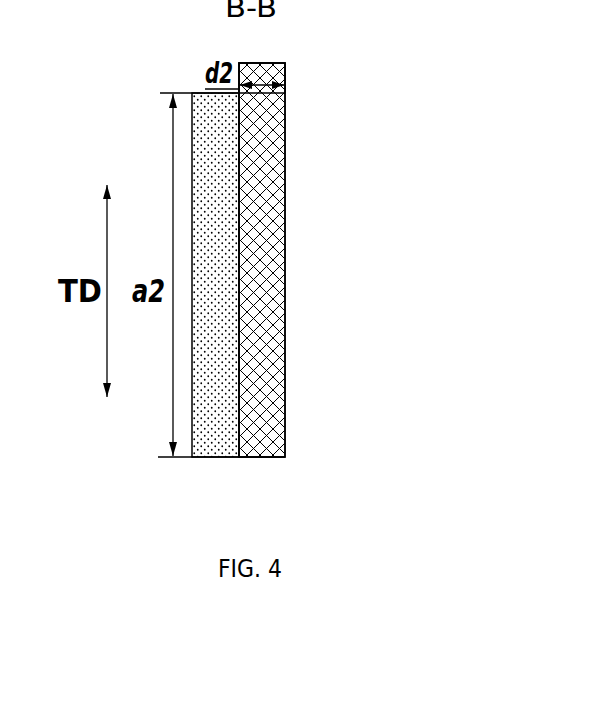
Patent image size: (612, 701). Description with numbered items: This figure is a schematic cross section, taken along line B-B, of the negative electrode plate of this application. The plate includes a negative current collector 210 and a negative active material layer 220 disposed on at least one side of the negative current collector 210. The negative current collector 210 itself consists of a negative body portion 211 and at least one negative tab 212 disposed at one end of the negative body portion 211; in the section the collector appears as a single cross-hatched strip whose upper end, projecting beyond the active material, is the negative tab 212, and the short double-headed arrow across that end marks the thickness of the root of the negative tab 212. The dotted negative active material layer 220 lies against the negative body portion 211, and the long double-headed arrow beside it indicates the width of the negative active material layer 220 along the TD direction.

The negative current collector 210 is at (403, 133).
The negative body portion 211 is at (282, 185).
The negative tab 212 is at (285, 76).
The negative active material layer 220 is at (218, 390).